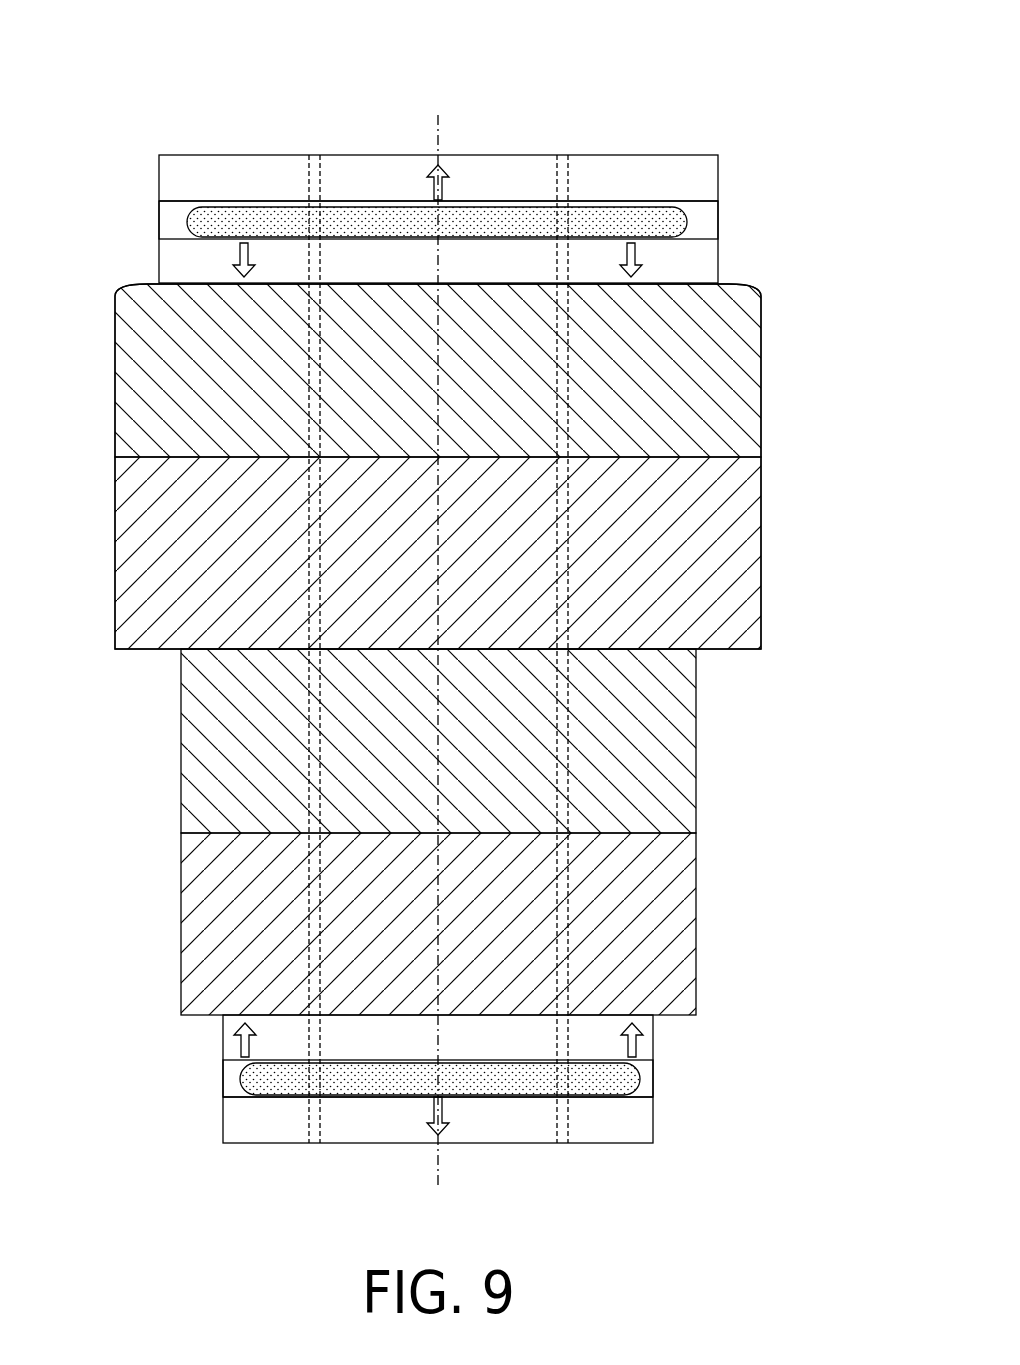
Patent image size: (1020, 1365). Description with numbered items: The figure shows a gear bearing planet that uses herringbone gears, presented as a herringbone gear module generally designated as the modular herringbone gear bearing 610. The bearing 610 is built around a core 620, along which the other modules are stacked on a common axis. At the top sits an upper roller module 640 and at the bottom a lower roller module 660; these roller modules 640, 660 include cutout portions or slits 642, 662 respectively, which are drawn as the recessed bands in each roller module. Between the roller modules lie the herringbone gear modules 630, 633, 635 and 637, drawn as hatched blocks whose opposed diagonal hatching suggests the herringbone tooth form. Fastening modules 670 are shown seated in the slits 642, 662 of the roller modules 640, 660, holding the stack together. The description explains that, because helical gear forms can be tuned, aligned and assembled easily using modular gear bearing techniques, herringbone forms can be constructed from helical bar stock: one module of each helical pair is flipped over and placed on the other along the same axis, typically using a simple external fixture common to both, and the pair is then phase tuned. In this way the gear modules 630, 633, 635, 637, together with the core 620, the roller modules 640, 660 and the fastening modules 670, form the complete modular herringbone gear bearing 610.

The modular herringbone gear bearing 610 is at (632, 131).
The core 620 is at (306, 563).
The herringbone gear module 630 is at (761, 372).
The herringbone gear module 633 is at (761, 562).
The herringbone gear module 635 is at (697, 740).
The herringbone gear module 637 is at (697, 912).
The upper roller module 640 is at (159, 172).
The slit 642 is at (172, 223).
The lower roller module 660 is at (638, 1127).
The slit 662 is at (653, 1080).
The fastening module 670 is at (687, 222).